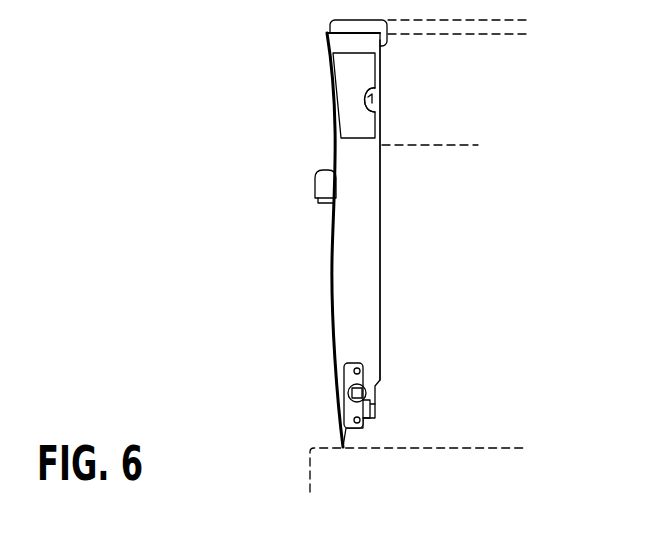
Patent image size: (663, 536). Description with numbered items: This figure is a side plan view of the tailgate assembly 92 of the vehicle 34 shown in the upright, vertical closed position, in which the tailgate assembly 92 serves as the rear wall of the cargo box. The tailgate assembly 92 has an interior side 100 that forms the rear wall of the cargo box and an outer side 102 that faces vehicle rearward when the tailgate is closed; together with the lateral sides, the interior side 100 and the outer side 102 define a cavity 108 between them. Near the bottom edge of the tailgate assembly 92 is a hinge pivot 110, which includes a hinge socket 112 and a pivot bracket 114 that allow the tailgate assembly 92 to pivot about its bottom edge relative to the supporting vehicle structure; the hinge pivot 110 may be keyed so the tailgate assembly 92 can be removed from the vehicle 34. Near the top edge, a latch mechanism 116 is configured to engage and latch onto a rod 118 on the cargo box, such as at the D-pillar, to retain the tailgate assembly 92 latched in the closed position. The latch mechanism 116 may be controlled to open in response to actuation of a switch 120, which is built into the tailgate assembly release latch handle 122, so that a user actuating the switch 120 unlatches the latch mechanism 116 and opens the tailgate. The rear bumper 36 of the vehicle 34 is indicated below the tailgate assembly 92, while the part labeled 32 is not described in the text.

The door 32 is at (350, 272).
The vehicle 34 is at (414, 226).
The rear bumper 36 is at (308, 472).
The tailgate assembly 92 is at (322, 39).
The interior side 100 is at (377, 70).
The outer side 102 is at (332, 68).
The cavity 108 is at (366, 317).
The hinge pivot 110 is at (397, 403).
The hinge socket 112 is at (366, 392).
The pivot bracket 114 is at (352, 393).
The latch mechanism 116 is at (369, 100).
The rod 118 is at (373, 98).
The switch 120 is at (322, 203).
The tailgate assembly release latch handle 122 is at (322, 170).